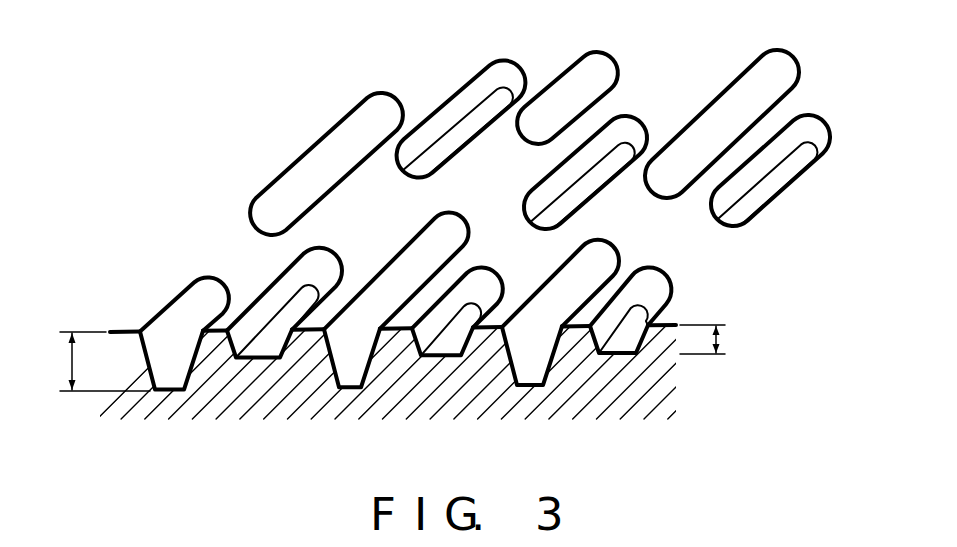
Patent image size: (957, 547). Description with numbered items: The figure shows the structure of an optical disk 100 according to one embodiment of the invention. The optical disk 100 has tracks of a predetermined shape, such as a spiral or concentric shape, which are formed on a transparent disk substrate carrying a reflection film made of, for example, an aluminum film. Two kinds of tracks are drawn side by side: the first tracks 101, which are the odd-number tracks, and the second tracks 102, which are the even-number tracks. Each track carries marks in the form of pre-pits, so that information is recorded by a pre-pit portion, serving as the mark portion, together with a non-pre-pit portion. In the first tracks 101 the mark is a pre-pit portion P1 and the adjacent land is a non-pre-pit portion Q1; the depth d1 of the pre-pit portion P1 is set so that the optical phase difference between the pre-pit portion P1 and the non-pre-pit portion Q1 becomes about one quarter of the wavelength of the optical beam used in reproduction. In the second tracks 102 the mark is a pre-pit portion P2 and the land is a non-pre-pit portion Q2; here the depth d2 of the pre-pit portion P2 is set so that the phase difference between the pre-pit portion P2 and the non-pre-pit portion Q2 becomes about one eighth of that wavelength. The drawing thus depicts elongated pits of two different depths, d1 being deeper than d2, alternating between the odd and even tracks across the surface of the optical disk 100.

The optical disk 100 is at (349, 75).
The first tracks 101 is at (396, 74).
The second tracks 102 is at (509, 51).
The pre-pit portion P1 is at (301, 161).
The pre-pit portion P2 is at (780, 186).
The non-pre-pit portion Q1 is at (246, 252).
The non-pre-pit portion Q2 is at (697, 252).
The depth of pre-pit portion d1 is at (93, 361).
The depth of pre-pit portion d2 is at (718, 339).